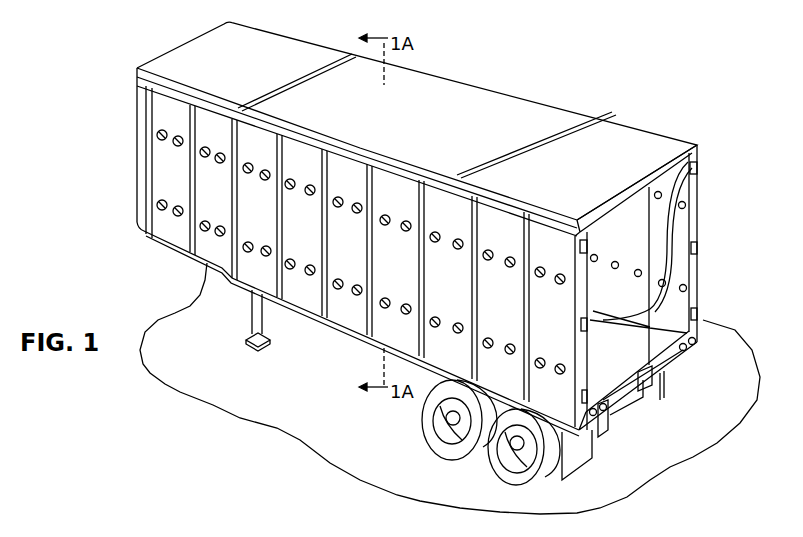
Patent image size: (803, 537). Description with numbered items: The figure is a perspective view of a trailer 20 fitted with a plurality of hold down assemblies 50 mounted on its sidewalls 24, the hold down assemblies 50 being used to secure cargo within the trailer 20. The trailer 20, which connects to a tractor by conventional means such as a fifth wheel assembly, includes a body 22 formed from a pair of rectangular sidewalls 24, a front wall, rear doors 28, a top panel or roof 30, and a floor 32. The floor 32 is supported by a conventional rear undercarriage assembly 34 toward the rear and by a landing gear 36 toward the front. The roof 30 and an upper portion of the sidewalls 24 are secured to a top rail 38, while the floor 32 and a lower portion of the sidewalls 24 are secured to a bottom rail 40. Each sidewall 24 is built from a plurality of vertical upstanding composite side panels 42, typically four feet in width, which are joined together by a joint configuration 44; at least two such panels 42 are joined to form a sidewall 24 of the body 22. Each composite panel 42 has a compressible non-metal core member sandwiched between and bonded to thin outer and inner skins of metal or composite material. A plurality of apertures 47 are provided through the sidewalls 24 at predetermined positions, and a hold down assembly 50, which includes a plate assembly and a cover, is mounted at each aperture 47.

The trailer 20 is at (423, 253).
The body 22 is at (417, 252).
The sidewalls 24 is at (352, 313).
The rear doors 28 is at (659, 287).
The roof 30 is at (530, 115).
The floor 32 is at (590, 325).
The rear undercarriage assembly 34 is at (428, 430).
The landing gear 36 is at (248, 345).
The top rail 38 is at (392, 168).
The bottom rail 40 is at (305, 312).
The composite side panels 42 is at (411, 276).
The joint configuration 44 is at (436, 183).
The apertures 47 is at (658, 196).
The hold down assembly 50 is at (172, 157).